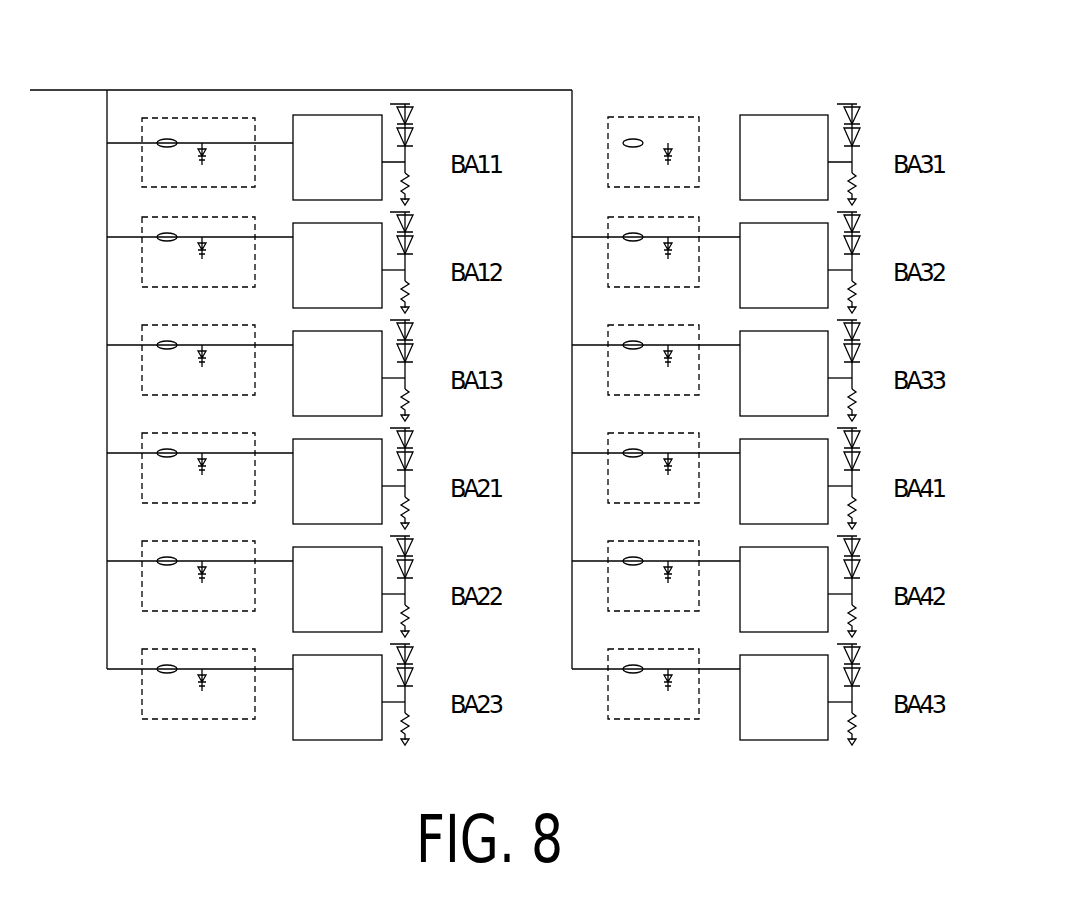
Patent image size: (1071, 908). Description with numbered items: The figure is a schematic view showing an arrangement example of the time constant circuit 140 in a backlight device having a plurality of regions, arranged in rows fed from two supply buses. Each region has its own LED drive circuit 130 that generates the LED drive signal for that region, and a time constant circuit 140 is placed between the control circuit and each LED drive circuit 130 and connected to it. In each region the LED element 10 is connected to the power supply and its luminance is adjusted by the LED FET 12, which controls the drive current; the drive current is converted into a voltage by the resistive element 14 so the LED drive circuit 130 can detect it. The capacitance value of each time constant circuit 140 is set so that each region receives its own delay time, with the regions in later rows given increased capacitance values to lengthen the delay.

The LED element 10 is at (425, 125).
The LED FET 12 is at (424, 158).
The resistive element 14 is at (419, 191).
The LED drive circuit 130 is at (355, 171).
The time constant circuit 140 is at (173, 116).